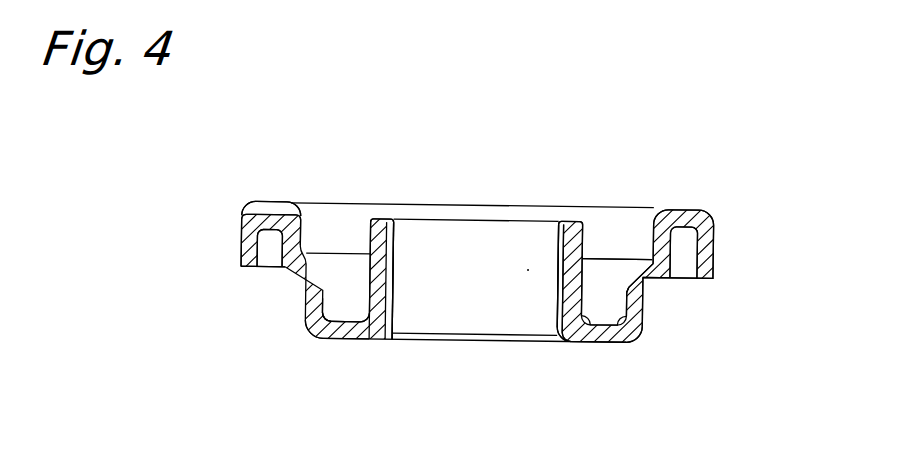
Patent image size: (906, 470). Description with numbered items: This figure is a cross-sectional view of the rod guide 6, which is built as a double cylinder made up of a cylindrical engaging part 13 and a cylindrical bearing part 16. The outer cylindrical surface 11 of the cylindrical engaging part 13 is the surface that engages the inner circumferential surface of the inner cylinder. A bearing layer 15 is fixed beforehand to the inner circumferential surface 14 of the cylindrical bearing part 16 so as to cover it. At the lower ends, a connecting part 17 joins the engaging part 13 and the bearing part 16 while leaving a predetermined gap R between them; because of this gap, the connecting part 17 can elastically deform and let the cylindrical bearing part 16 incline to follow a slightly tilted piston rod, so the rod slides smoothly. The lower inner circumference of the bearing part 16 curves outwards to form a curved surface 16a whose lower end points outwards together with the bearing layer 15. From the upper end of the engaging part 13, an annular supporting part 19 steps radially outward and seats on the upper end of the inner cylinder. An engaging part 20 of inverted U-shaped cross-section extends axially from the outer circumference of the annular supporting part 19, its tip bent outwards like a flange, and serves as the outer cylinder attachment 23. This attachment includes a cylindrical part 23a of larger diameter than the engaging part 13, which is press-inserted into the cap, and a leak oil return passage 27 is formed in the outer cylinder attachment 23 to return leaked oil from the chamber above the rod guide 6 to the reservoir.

The rod guide 6 is at (638, 351).
The outer cylindrical surface 11 is at (643, 302).
The cylindrical engaging part 13 is at (641, 292).
The inner circumferential surface 14 is at (390, 282).
The bearing layer 15 is at (410, 244).
The cylindrical bearing part 16 is at (569, 298).
The curved surface 16a is at (564, 335).
The connecting part 17 is at (329, 327).
The annular supporting part 19 is at (632, 248).
The engaging part 20 is at (715, 226).
The outer cylinder attachment 23 is at (683, 209).
The cylindrical part 23a is at (241, 240).
The leak oil return passage 27 is at (273, 219).
The gap R is at (343, 277).